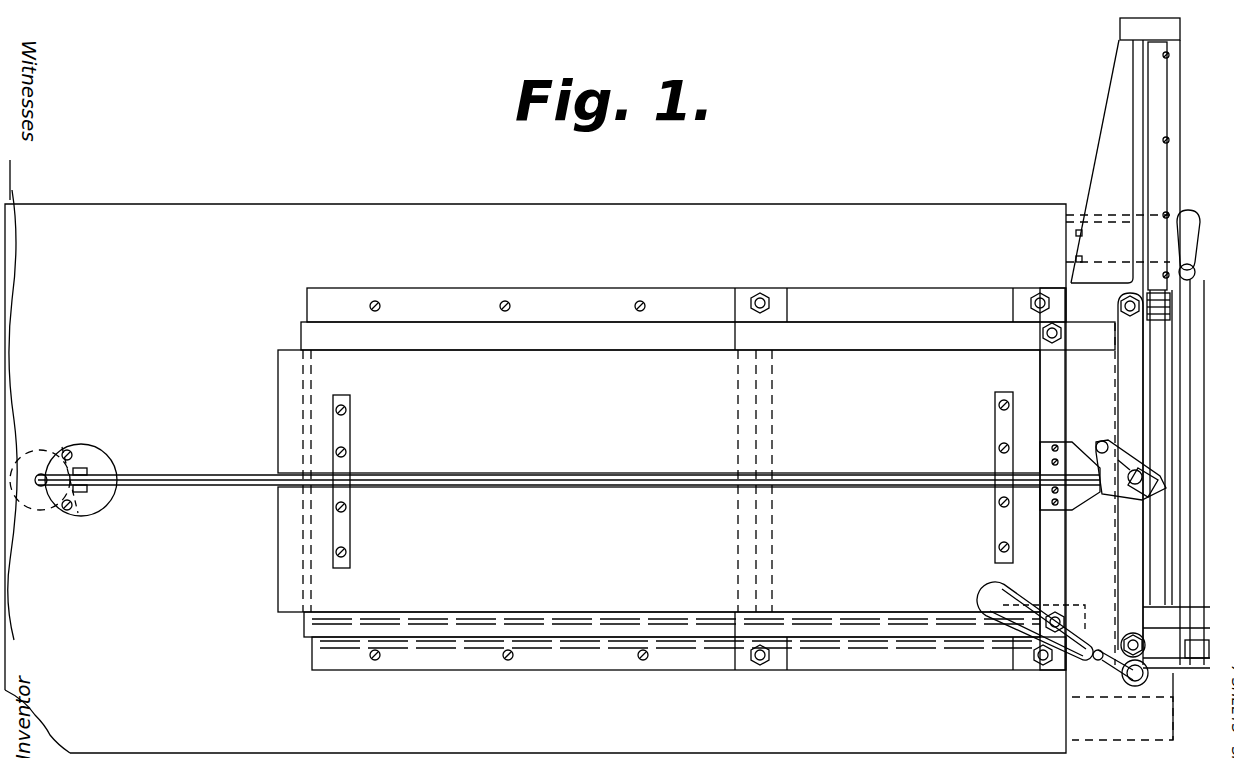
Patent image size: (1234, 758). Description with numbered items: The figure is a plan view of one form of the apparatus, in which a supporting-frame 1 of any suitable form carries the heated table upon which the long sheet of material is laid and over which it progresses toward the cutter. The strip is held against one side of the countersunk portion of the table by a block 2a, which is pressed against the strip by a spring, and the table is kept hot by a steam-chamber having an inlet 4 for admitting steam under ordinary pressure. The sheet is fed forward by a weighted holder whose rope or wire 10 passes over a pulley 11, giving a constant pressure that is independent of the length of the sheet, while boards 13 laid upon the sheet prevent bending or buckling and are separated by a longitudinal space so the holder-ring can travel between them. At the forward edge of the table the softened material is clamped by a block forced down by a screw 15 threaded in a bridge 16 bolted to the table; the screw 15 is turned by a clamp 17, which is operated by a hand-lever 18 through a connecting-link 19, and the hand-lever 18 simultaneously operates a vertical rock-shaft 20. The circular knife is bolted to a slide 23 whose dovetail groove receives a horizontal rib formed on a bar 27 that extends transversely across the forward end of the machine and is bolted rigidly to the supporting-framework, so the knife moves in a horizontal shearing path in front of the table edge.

The supporting-frame 1 is at (535, 478).
The block 2a is at (1075, 645).
The inlet 4 is at (1213, 510).
The rope or wire 10 is at (205, 477).
The pulley 11 is at (98, 473).
The boards 13 is at (659, 481).
The screw 15 is at (1140, 482).
The bridge 16 is at (1130, 379).
The clamp 17 is at (1108, 445).
The hand-lever 18 is at (1013, 598).
The connecting-link 19 is at (1100, 553).
The vertical rock-shaft 20 is at (1136, 682).
The slide 23 is at (1158, 163).
The bar 27 is at (1180, 144).